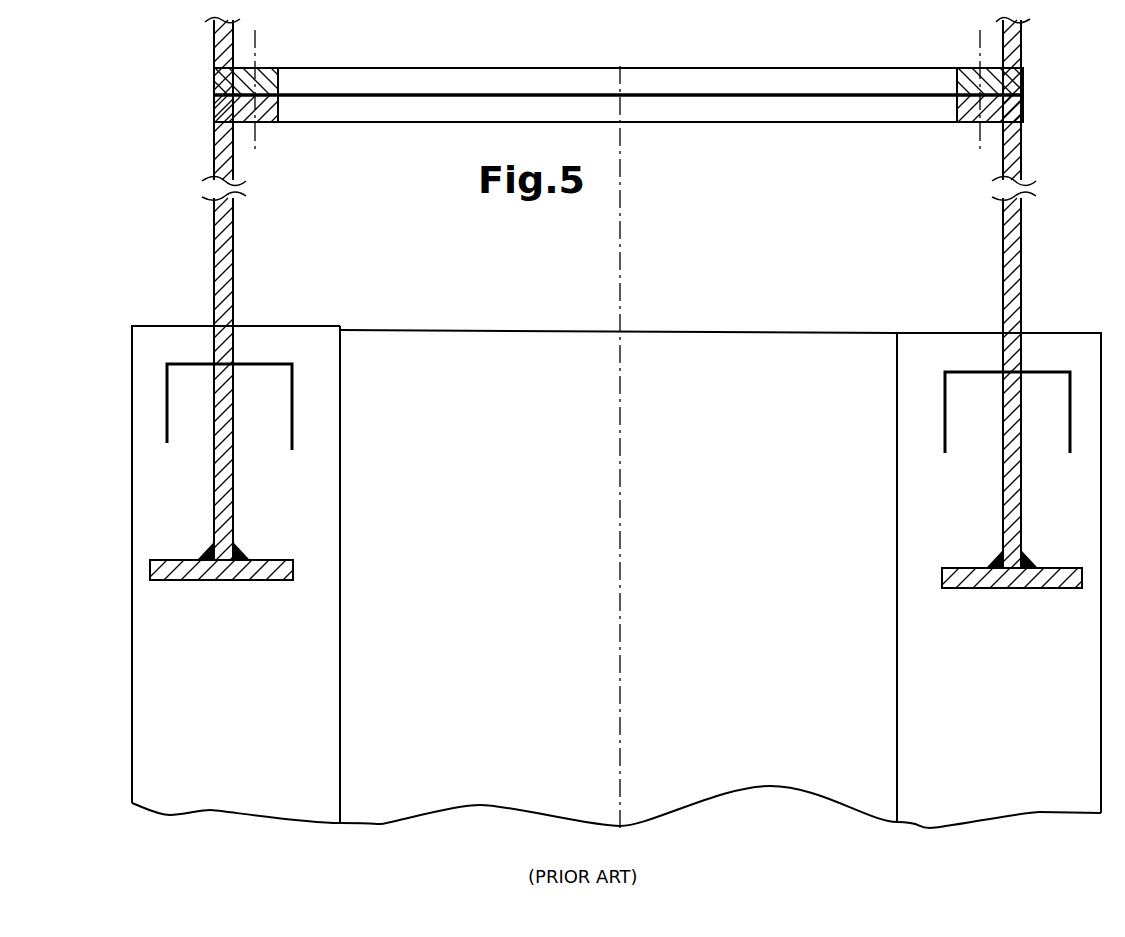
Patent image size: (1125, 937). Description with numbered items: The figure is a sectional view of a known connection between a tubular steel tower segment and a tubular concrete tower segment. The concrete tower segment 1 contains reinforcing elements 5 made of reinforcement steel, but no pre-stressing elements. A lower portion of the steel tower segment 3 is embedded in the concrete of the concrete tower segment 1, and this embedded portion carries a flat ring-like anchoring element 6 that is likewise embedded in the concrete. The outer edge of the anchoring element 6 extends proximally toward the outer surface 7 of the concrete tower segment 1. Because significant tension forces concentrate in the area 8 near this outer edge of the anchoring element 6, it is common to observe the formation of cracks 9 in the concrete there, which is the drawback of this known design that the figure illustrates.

The concrete tower segment 1 is at (165, 493).
The steel tower segment 3 is at (215, 250).
The reinforcing elements 5 is at (168, 400).
The anchoring element 6 is at (280, 558).
The outer surface 7 is at (132, 590).
The area 8 is at (140, 553).
The cracks 9 is at (145, 574).